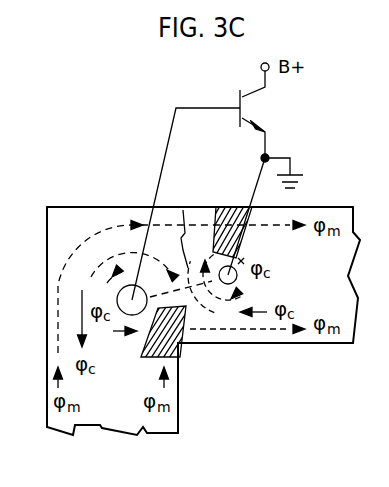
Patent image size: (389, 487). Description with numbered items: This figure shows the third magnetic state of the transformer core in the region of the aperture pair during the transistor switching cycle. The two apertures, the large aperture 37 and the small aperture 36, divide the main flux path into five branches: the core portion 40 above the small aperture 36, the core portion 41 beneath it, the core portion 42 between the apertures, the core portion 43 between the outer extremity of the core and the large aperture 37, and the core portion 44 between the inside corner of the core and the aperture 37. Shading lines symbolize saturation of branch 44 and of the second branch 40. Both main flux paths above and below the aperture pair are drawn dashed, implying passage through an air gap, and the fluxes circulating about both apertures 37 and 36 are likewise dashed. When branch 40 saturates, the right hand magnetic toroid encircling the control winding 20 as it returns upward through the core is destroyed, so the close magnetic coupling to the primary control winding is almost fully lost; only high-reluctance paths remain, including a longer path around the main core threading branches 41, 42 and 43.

The control winding 20 is at (170, 128).
The small aperture 36 is at (237, 281).
The large aperture 37 is at (148, 298).
The core portion above the small aperture 40 is at (243, 238).
The core portion beneath the small aperture 41 is at (229, 304).
The core portion between the apertures 42 is at (183, 210).
The core portion between the outer extremity of the core and the large aperture 43 is at (127, 245).
The core portion between the inside corner of the core and the aperture 44 is at (180, 360).